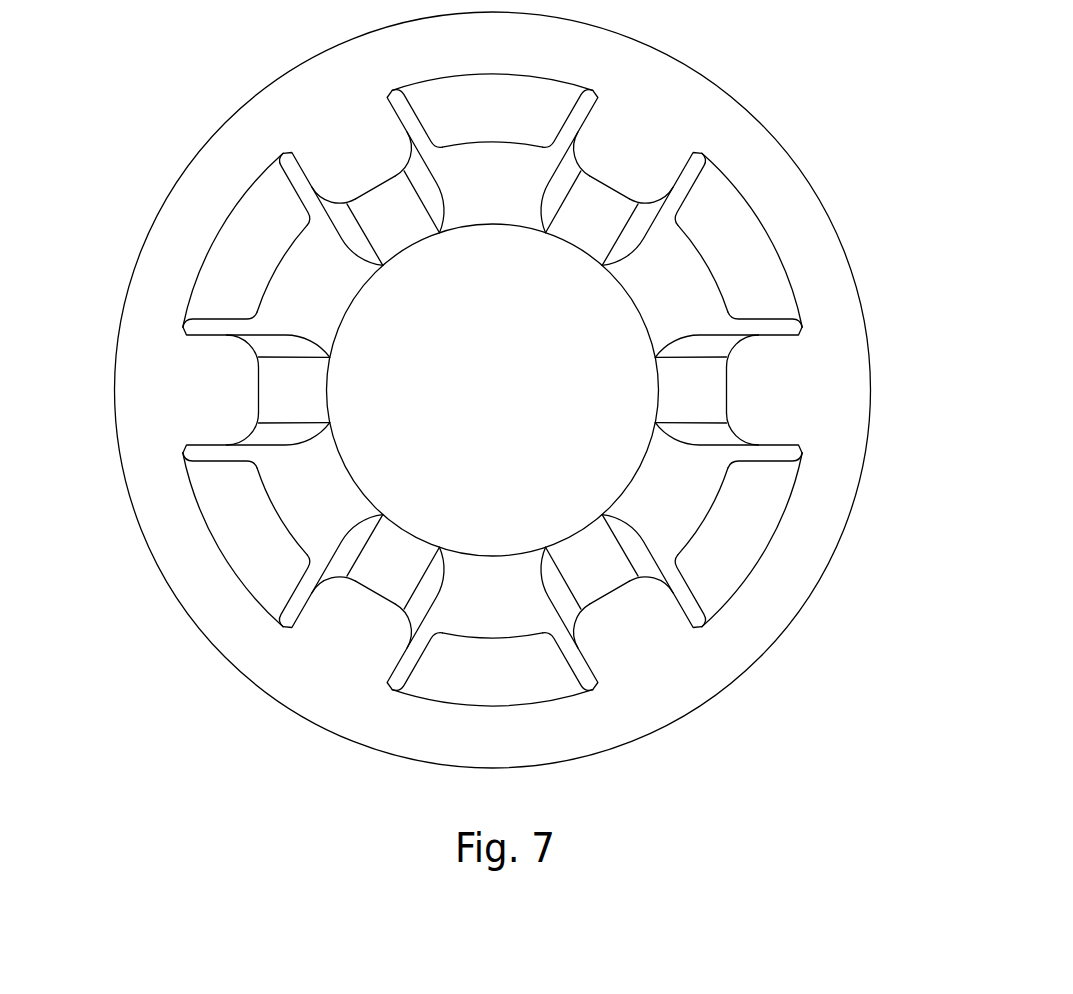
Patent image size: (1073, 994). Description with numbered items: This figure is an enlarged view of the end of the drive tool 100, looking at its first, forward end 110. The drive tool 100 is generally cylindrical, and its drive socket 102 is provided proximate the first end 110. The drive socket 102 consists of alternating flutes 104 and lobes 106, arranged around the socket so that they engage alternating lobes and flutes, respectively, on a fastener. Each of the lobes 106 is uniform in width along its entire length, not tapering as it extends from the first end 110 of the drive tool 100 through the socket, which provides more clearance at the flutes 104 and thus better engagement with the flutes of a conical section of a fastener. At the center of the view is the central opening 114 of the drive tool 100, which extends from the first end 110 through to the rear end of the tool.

The drive tool 100 is at (565, 390).
The drive socket 102 is at (568, 381).
The flutes 104 is at (505, 120).
The lobes 106 is at (300, 386).
The first, forward end 110 is at (800, 381).
The central opening 114 is at (585, 497).